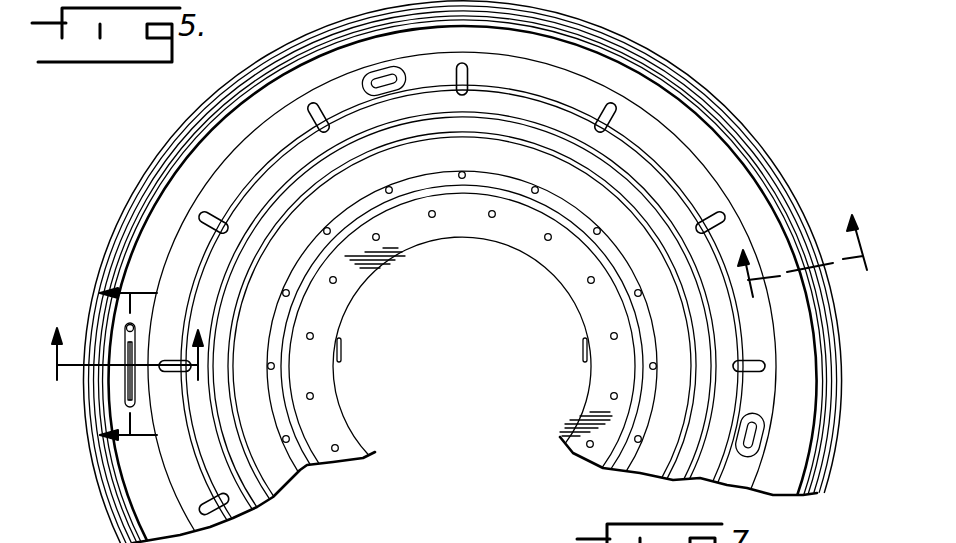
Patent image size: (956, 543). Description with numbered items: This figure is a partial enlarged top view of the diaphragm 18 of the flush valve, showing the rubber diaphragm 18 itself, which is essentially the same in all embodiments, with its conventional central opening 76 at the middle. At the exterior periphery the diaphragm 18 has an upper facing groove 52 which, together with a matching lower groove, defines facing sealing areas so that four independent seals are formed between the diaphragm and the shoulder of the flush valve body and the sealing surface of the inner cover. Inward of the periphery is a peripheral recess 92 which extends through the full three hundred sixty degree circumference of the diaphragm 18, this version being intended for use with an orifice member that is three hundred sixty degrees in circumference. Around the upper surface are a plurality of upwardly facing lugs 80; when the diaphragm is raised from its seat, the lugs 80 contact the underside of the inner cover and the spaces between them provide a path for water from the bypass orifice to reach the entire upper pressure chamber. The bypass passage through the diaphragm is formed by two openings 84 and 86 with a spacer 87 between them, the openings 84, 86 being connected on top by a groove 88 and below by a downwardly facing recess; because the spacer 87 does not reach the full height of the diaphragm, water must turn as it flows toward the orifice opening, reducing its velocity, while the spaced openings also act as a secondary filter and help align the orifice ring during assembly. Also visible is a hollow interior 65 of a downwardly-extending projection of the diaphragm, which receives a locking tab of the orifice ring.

The diaphragm 18 is at (753, 111).
The upper facing groove 52 is at (140, 204).
The peripheral recess 92 is at (213, 140).
The central opening 76 is at (575, 296).
The upwardly facing lugs 80 is at (705, 207).
The hollow interior 65 is at (383, 80).
The opening 86 is at (128, 332).
The groove 88 is at (135, 352).
The spacer 87 is at (126, 376).
The opening 84 is at (128, 397).